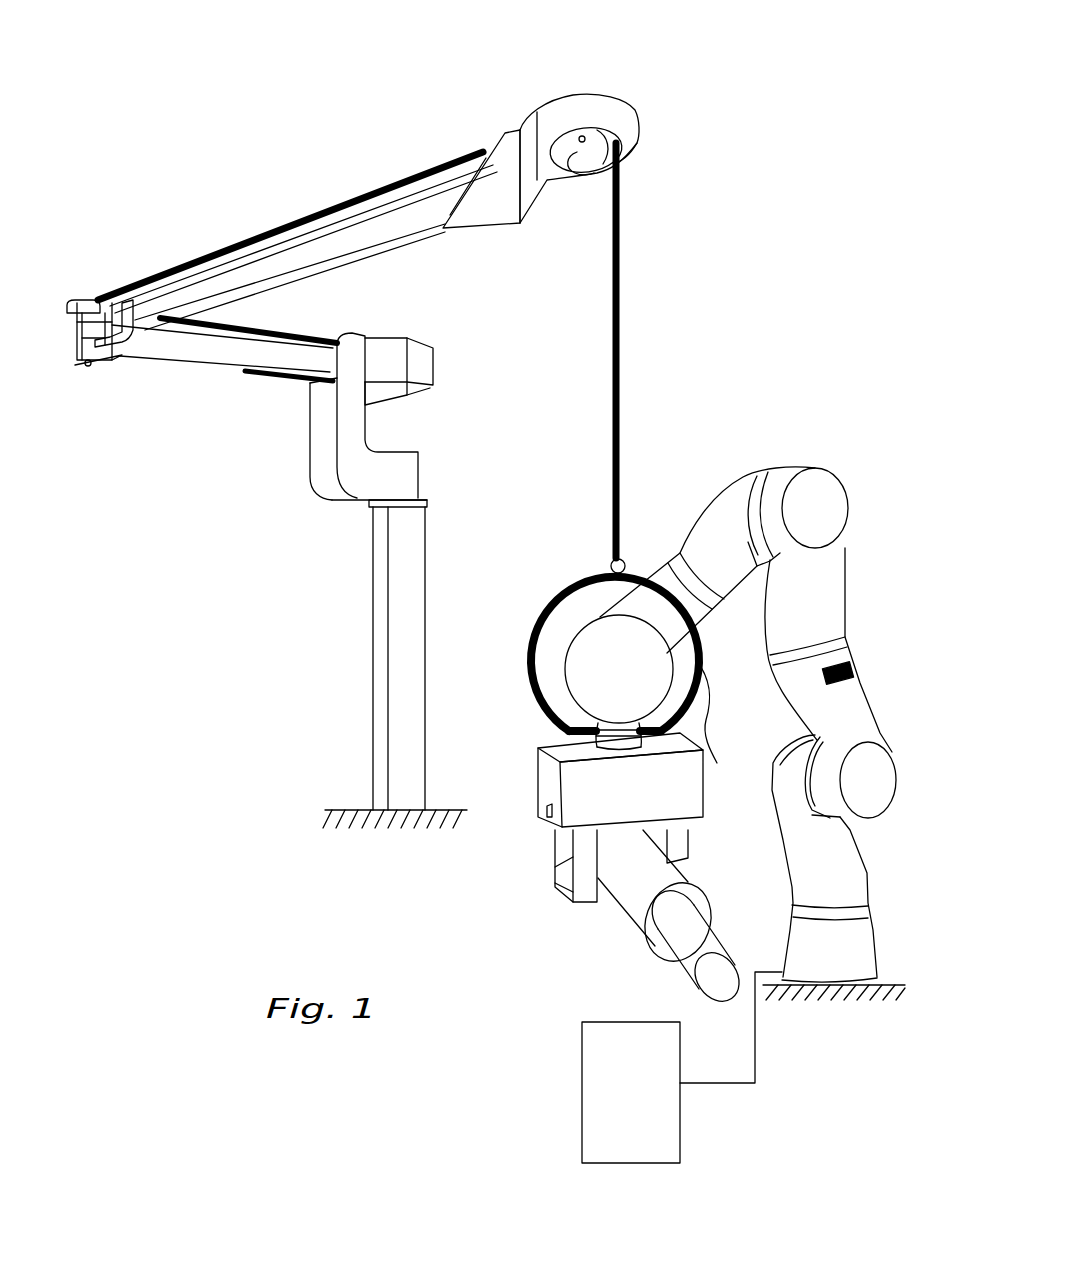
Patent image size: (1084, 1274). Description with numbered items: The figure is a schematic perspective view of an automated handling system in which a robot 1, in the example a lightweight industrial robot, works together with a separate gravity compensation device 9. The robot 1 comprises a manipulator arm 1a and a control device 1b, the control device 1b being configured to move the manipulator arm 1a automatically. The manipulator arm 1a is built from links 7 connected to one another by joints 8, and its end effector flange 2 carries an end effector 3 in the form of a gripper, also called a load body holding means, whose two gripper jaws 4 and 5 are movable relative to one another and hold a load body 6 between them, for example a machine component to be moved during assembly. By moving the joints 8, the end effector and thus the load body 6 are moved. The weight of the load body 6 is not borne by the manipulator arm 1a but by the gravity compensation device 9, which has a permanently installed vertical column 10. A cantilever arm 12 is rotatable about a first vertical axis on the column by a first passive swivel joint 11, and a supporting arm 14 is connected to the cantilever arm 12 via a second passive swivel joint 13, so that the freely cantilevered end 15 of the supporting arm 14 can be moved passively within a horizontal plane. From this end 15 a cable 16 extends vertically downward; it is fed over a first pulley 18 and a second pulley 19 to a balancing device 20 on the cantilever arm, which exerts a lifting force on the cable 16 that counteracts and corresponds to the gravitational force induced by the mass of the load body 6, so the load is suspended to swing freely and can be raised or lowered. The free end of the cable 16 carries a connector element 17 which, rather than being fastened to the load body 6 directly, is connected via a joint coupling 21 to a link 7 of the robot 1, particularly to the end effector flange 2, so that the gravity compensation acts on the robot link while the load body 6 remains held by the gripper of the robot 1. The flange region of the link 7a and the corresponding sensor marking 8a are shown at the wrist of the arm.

The robot 1 is at (864, 626).
The manipulator arm 1a is at (834, 984).
The control device 1b is at (613, 1108).
The end effector flange 2 is at (612, 748).
The load body holding means 3 is at (558, 838).
The gripper jaw 4 is at (560, 872).
The gripper jaw 5 is at (683, 842).
The load body 6 is at (630, 877).
The link 7 is at (733, 550).
The robot flange ball 7a is at (642, 680).
The joint 8 is at (600, 618).
The flange sensor 8a is at (613, 747).
The gravity compensation device 9 is at (672, 170).
The vertical column 10 is at (403, 672).
The first passive swivel joint 11 is at (420, 494).
The cantilever arm 12 is at (230, 357).
The second passive swivel joint 13 is at (88, 367).
The supporting arm 14 is at (307, 253).
The freely cantilevered end 15 is at (588, 112).
The cable 16 is at (620, 295).
The connector element 17 is at (610, 561).
The first pulley 18 is at (580, 152).
The second pulley 19 is at (84, 300).
The balancing device 20 is at (388, 353).
The joint coupling 21 is at (726, 729).